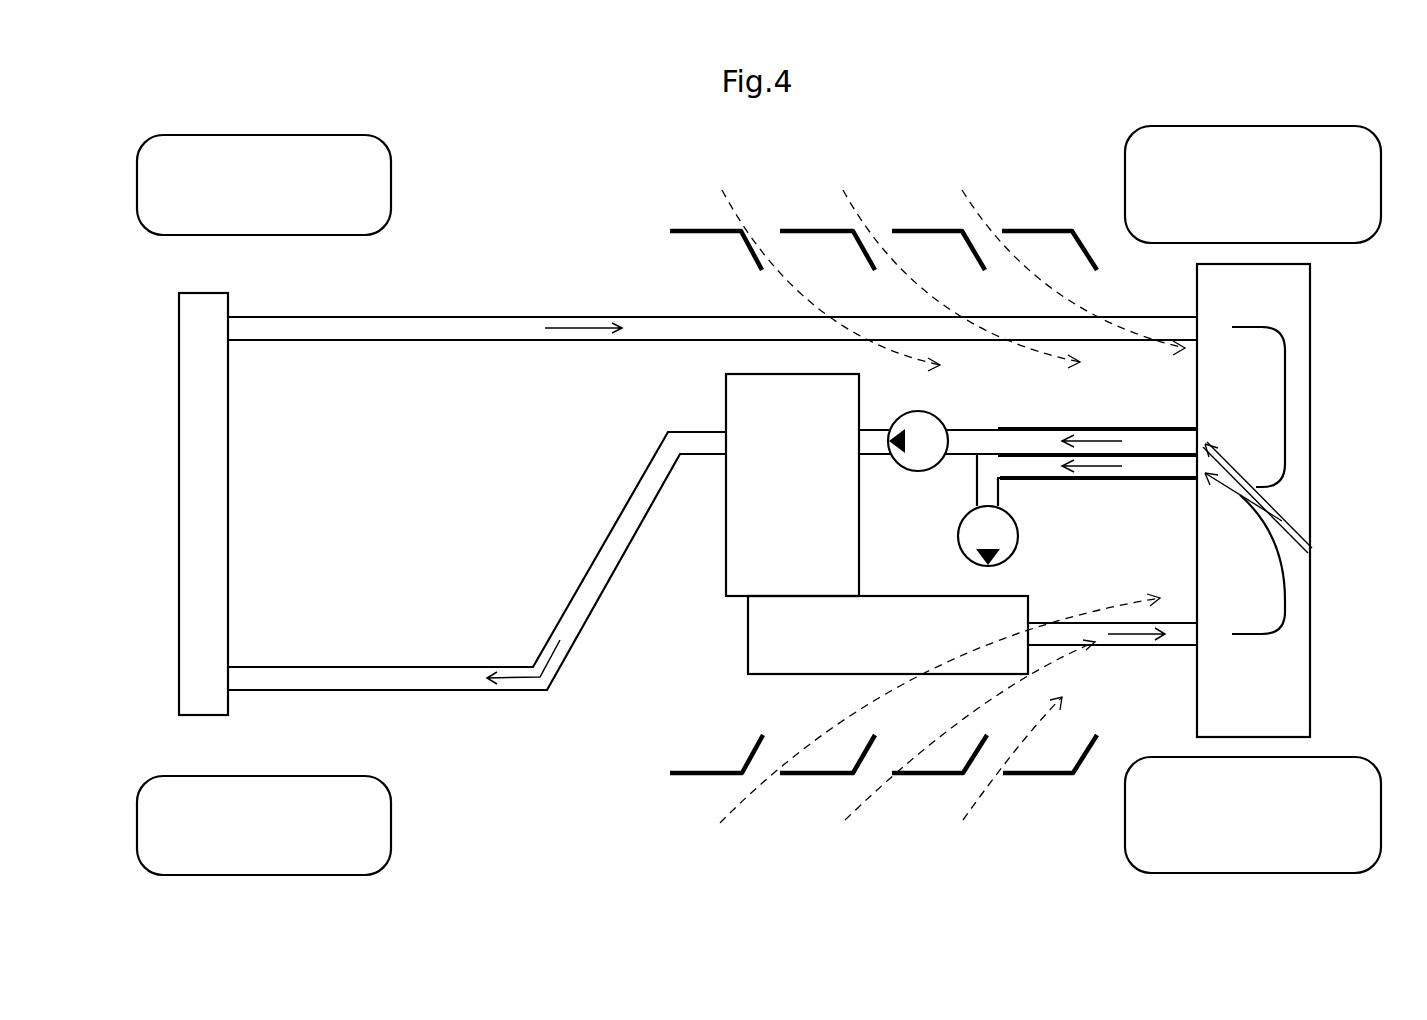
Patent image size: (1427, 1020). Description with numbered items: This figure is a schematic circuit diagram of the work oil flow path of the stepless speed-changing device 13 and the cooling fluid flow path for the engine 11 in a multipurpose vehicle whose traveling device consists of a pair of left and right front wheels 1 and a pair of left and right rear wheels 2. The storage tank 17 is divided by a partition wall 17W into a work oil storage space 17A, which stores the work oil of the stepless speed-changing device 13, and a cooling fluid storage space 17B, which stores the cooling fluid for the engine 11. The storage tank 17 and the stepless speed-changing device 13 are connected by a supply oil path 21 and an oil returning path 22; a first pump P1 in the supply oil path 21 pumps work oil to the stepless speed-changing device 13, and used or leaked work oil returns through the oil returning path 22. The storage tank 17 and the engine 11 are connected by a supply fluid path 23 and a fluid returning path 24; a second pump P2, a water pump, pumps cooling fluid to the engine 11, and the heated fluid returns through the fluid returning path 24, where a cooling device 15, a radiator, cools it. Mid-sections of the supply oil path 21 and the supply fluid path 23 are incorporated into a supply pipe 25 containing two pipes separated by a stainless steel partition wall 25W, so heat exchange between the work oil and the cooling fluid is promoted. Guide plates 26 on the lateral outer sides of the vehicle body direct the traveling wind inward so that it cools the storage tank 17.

The front wheel 1 is at (372, 186).
The rear wheel 2 is at (1140, 185).
The engine 11 is at (722, 408).
The stepless speed-changing device 13 is at (745, 632).
The cooling device 15 is at (205, 494).
The storage tank 17 is at (1310, 372).
The work oil storage space 17A is at (1280, 680).
The cooling fluid storage space 17B is at (1253, 423).
The partition wall 17W is at (1282, 520).
The supply oil path 21 is at (1035, 458).
The oil returning path 22 is at (1128, 648).
The supply fluid path 23 is at (975, 430).
The fluid returning path 24 is at (408, 342).
The supply pipe 25 is at (1130, 482).
The partition wall 25W is at (1140, 452).
The guide plate 26 is at (920, 228).
The first pump P1 is at (968, 540).
The second pump P2 is at (918, 458).